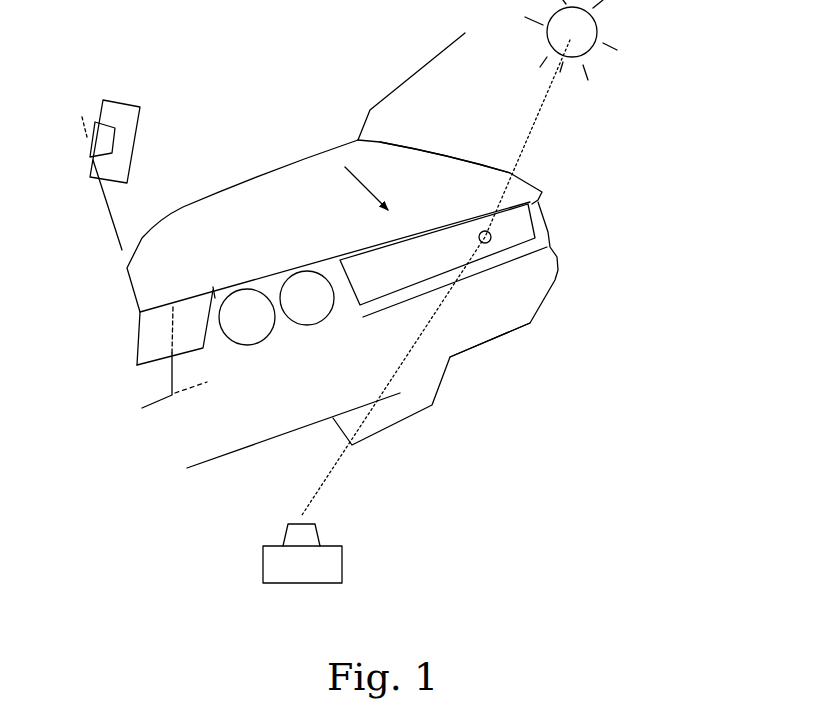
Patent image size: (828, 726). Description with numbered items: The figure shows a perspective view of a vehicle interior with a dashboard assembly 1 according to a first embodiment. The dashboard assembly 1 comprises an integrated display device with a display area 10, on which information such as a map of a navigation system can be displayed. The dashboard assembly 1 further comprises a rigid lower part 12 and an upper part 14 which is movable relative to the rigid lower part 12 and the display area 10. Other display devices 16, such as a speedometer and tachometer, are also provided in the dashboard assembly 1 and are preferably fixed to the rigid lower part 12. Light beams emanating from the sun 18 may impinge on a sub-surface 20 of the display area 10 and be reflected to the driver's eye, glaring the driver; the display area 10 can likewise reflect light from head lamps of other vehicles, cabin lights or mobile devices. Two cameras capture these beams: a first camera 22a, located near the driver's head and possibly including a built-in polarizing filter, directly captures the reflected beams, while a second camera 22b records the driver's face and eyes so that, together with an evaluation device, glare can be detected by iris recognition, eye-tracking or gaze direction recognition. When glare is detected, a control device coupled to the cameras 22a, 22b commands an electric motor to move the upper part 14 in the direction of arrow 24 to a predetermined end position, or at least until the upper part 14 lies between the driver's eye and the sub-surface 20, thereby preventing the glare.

The dashboard assembly 1 is at (537, 408).
The display area 10 is at (523, 225).
The rigid lower part 12 is at (527, 315).
The upper part 14 is at (417, 158).
The other display devices 16 is at (317, 317).
The sun 18 is at (575, 32).
The sub-surface 20 is at (477, 232).
The first camera 22a is at (305, 570).
The second camera 22b is at (120, 122).
The arrow 24 is at (340, 192).